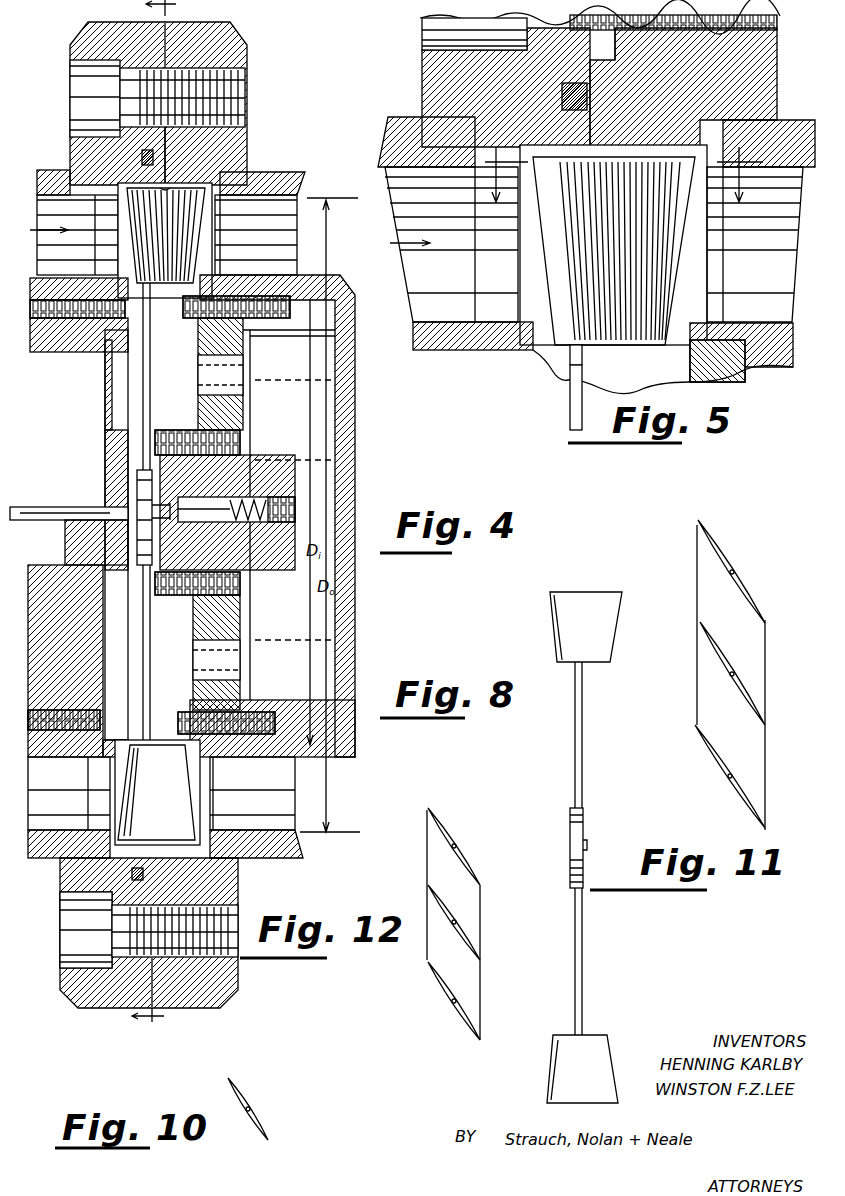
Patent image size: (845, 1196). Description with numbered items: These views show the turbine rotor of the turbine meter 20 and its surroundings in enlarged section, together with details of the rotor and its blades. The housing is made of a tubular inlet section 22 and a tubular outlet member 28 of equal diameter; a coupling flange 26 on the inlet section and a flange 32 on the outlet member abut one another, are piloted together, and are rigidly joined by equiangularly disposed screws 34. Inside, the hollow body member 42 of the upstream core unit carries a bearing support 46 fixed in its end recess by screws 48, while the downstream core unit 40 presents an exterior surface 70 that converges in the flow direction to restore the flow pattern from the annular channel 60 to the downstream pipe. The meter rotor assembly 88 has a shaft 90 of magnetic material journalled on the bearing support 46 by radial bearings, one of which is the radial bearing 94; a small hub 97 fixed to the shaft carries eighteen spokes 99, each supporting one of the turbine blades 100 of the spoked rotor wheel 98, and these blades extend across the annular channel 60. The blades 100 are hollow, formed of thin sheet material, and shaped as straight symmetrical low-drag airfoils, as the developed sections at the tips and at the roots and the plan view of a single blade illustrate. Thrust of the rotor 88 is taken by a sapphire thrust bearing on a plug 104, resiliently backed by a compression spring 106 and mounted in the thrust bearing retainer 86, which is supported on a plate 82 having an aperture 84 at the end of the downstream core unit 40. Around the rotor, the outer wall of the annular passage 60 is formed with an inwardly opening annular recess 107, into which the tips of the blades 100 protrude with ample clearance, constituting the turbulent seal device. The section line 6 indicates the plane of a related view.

In FIG. 4, the section line 6- 6 is at (162, 520).
In FIG. 5, the turbine meter 20 is at (624, 189).
In FIG. 4, the tubular inlet section 22 is at (50, 169).
In FIG. 5, the tubular inlet section 22 is at (378, 135).
In FIG. 4, the coupling flange 26 is at (72, 34).
In FIG. 5, the coupling flange 26 is at (428, 80).
In FIG. 4, the tubular outlet member 28 is at (296, 173).
In FIG. 5, the tubular outlet member 28 is at (803, 128).
In FIG. 4, the flange 32 is at (249, 50).
In FIG. 5, the flange 32 is at (772, 72).
In FIG. 4, the screws 34 is at (76, 106).
In FIG. 5, the screws 34 is at (430, 38).
In FIG. 4, the downstream core unit 40 is at (356, 766).
In FIG. 5, the downstream core unit 40 is at (802, 348).
In FIG. 4, the hollow body member 42 is at (53, 268).
In FIG. 5, the hollow body member 42 is at (433, 345).
In FIG. 4, the bearing support 46 is at (68, 630).
In FIG. 4, the screws 48 is at (79, 326).
In FIG. 5, the annular channel 60 is at (435, 172).
In FIG. 4, the exterior surface 70 is at (354, 390).
In FIG. 5, the exterior surface 70 is at (774, 368).
In FIG. 4, the plate 82 is at (236, 619).
In FIG. 5, the plate 82 is at (717, 377).
In FIG. 4, the aperture 84 is at (241, 393).
In FIG. 4, the thrust bearing retainer 86 is at (270, 567).
In FIG. 4, the meter rotor assembly 88 is at (128, 382).
In FIG. 4, the shaft 90 is at (57, 501).
In FIG. 4, the radial bearing 94 is at (127, 537).
In FIG. 4, the hub 97 is at (150, 547).
In FIG. 8, the hub 97 is at (572, 818).
In FIG. 4, the spoked rotor wheel 98 is at (152, 372).
In FIG. 5, the spoked rotor wheel 98 is at (564, 379).
In FIG. 8, the spoked rotor wheel 98 is at (604, 731).
In FIG. 4, the spokes 99 is at (142, 683).
In FIG. 5, the spokes 99 is at (570, 418).
In FIG. 8, the spokes 99 is at (577, 743).
In FIG. 11, the spokes 99 is at (723, 550).
In FIG. 12, the spokes 99 is at (448, 835).
In FIG. 10, the spokes 99 is at (250, 1108).
In FIG. 4, the turbine blades 100 is at (174, 242).
In FIG. 5, the turbine blades 100 is at (626, 277).
In FIG. 8, the turbine blades 100 is at (563, 597).
In FIG. 11, the turbine blades 100 is at (700, 537).
In FIG. 12, the turbine blades 100 is at (468, 858).
In FIG. 10, the turbine blades 100 is at (255, 1128).
In FIG. 4, the plug 104 is at (205, 505).
In FIG. 4, the compression spring 106 is at (253, 468).
In FIG. 4, the annular recess 107 is at (180, 201).
In FIG. 5, the annular recess 107 is at (633, 147).